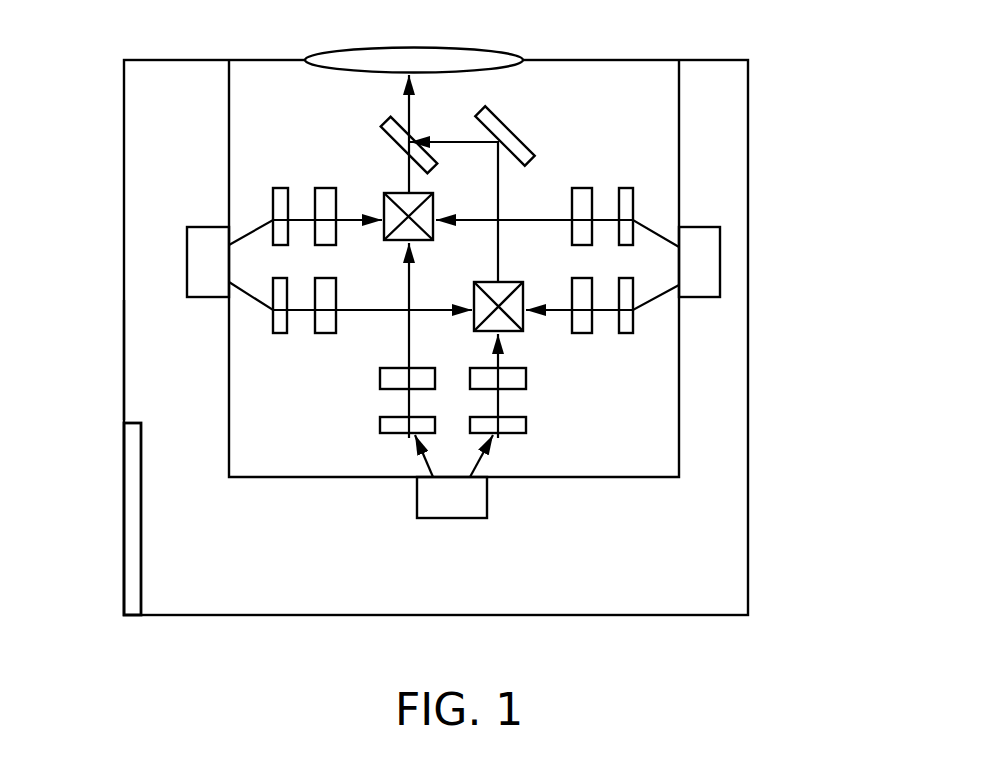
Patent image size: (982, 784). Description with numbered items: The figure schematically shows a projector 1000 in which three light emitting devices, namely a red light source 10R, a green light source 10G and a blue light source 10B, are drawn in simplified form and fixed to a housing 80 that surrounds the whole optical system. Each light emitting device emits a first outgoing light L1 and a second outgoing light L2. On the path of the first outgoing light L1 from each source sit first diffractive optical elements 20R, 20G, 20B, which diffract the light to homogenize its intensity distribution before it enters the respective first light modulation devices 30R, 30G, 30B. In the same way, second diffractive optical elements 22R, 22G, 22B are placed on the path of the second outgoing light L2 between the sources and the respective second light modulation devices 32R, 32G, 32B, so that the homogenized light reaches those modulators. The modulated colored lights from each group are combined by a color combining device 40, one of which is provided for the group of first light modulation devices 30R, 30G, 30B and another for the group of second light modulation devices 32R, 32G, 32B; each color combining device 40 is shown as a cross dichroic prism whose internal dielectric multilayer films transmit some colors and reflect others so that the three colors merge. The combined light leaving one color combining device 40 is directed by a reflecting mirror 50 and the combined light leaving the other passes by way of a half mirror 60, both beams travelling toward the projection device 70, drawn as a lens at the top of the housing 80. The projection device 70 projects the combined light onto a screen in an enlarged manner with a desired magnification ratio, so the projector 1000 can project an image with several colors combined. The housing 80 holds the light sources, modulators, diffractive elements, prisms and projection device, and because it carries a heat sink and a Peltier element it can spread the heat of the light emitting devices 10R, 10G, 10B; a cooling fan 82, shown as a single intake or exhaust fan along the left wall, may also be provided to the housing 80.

The projector 1000 is at (795, 58).
The red light source (light emitting device) 10R is at (451, 510).
The green light source (light emitting device) 10G is at (200, 276).
The blue light source (light emitting device) 10B is at (705, 275).
The first diffractive optical element 20R is at (527, 425).
The second diffractive optical element 22R is at (390, 427).
The first light modulation device 30R is at (527, 377).
The second light modulation device 32R is at (392, 383).
The first diffractive optical element 20G is at (282, 328).
The second diffractive optical element 22G is at (280, 195).
The first light modulation device 30G is at (328, 328).
The second light modulation device 32G is at (327, 195).
The first diffractive optical element 20B is at (625, 195).
The second diffractive optical element 22B is at (622, 336).
The first light modulation device 30B is at (582, 195).
The second light modulation device 32B is at (582, 336).
The color combining device 40 is at (384, 196).
The reflecting mirror 50 is at (527, 138).
The half mirror 60 is at (385, 128).
The projection device 70 is at (337, 62).
The housing 80 is at (136, 354).
The cooling fan 82 is at (130, 493).
The first outgoing light L1 is at (662, 233).
The second outgoing light L2 is at (245, 233).